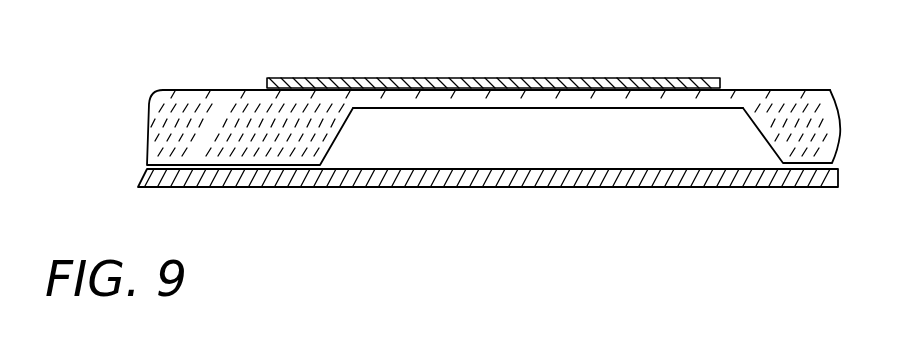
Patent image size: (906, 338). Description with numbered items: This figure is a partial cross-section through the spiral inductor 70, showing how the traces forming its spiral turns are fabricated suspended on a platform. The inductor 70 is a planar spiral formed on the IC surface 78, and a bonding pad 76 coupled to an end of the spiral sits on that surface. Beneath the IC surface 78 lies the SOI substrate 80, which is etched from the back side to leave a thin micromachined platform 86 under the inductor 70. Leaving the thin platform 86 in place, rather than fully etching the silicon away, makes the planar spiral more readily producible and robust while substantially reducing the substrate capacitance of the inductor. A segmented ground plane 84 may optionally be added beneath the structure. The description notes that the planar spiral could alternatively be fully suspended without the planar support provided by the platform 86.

The inductor 70 is at (660, 71).
The bonding pad 76 is at (323, 78).
The IC surface 78 is at (238, 90).
The SOI substrate 80 is at (170, 128).
The segmented ground plane 84 is at (345, 188).
The platform 86 is at (608, 100).